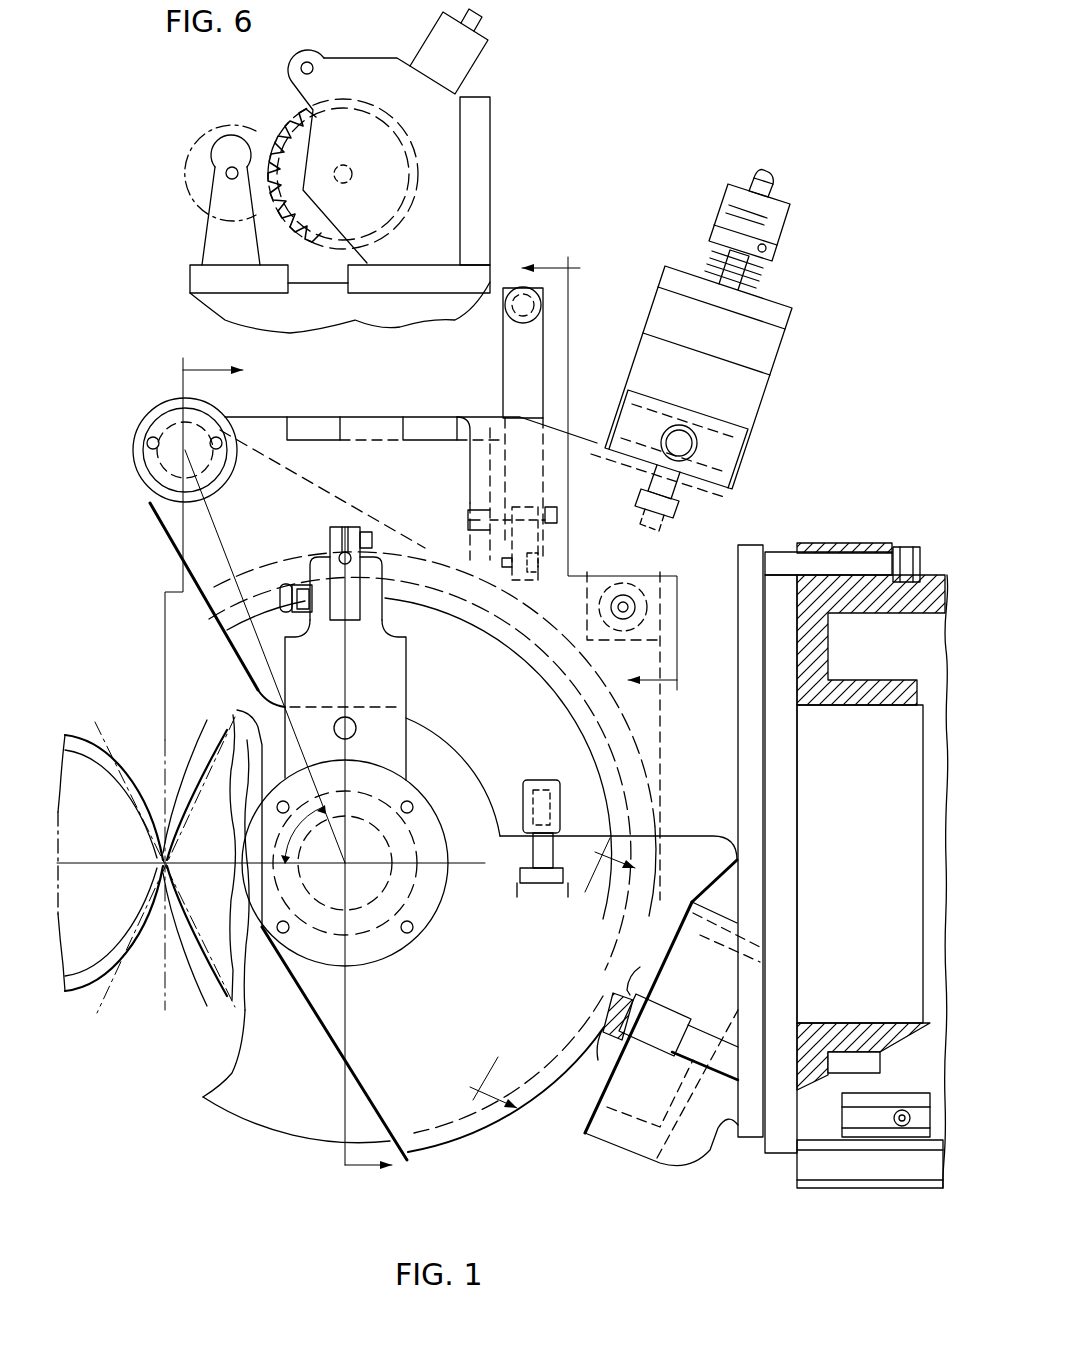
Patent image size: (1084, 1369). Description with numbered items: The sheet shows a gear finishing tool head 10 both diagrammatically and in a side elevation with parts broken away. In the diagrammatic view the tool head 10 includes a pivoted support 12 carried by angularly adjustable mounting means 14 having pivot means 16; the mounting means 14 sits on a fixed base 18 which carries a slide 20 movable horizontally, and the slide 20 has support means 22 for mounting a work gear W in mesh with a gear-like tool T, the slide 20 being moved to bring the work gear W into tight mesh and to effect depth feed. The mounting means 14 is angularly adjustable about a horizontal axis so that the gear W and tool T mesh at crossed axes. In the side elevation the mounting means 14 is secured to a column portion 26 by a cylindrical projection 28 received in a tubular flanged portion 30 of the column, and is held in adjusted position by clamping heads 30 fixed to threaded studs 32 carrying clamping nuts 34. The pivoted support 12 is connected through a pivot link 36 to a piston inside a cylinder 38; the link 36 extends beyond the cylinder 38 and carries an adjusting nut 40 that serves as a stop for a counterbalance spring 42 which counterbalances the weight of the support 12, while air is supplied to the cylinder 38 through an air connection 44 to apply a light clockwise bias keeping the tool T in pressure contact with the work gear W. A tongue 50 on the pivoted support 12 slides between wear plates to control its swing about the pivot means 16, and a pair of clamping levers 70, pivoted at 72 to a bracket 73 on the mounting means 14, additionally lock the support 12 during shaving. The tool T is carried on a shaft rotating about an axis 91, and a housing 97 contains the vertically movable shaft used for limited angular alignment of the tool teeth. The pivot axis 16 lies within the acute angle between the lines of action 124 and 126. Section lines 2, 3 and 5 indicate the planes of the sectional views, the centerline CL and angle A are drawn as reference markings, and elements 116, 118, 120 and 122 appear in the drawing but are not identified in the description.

In FIG. 6, the tool head 10 is at (375, 56).
In FIG. 1, the tool head 10 is at (421, 408).
In FIG. 6, the pivoted support 12 is at (305, 105).
In FIG. 1, the pivoted support 12 is at (237, 710).
In FIG. 6, the angularly adjustable mounting means 14 is at (387, 77).
In FIG. 1, the angularly adjustable mounting means 14 is at (353, 417).
In FIG. 6, the pivot means 16 is at (300, 70).
In FIG. 1, the pivot means 16 is at (200, 440).
In FIG. 6, the fixed base 18 is at (366, 312).
In FIG. 6, the slide 20 is at (190, 280).
In FIG. 6, the support means 22 is at (215, 235).
In FIG. 1, the column portion 26 is at (932, 600).
In FIG. 1, the cylindrical projection 28 is at (910, 775).
In FIG. 1, the tubular flanged portion 30 is at (748, 545).
In FIG. 1, the threaded studs 32 is at (835, 563).
In FIG. 1, the clamping nuts 34 is at (912, 547).
In FIG. 1, the pivot link 36 is at (676, 518).
In FIG. 1, the cylinder 38 is at (752, 398).
In FIG. 1, the adjusting nut 40 is at (790, 218).
In FIG. 1, the counterbalance spring 42 is at (767, 267).
In FIG. 1, the air connection 44 is at (682, 423).
In FIG. 1, the tongue 50 is at (615, 1143).
In FIG. 1, the clamping levers 70 is at (503, 392).
In FIG. 1, the pivot 72 is at (548, 520).
In FIG. 1, the bracket 73 is at (470, 477).
In FIG. 1, the axis 91 is at (352, 866).
In FIG. 1, the housing 97 is at (406, 685).
In FIG. 1, the motor clamp 116 is at (262, 690).
In FIG. 1, the mounting circle 118 is at (330, 868).
In FIG. 1, the workpiece edge 120 is at (187, 797).
In FIG. 1, the wheel edge 122 is at (150, 877).
In FIG. 1, the line of action 124 is at (212, 1010).
In FIG. 1, the line of action 126 is at (92, 1013).
In FIG. 6, the work gear W is at (205, 140).
In FIG. 1, the work gear W is at (84, 968).
In FIG. 6, the gear-like tool T is at (325, 238).
In FIG. 1, the gear-like tool T is at (205, 968).
In FIG. 1, the angle A is at (303, 834).
In FIG. 1, the section line 2 is at (278, 769).
In FIG. 1, the section line 3 is at (541, 972).
In FIG. 1, the section line 5 is at (605, 487).
In FIG. 1, the center line CL is at (159, 667).